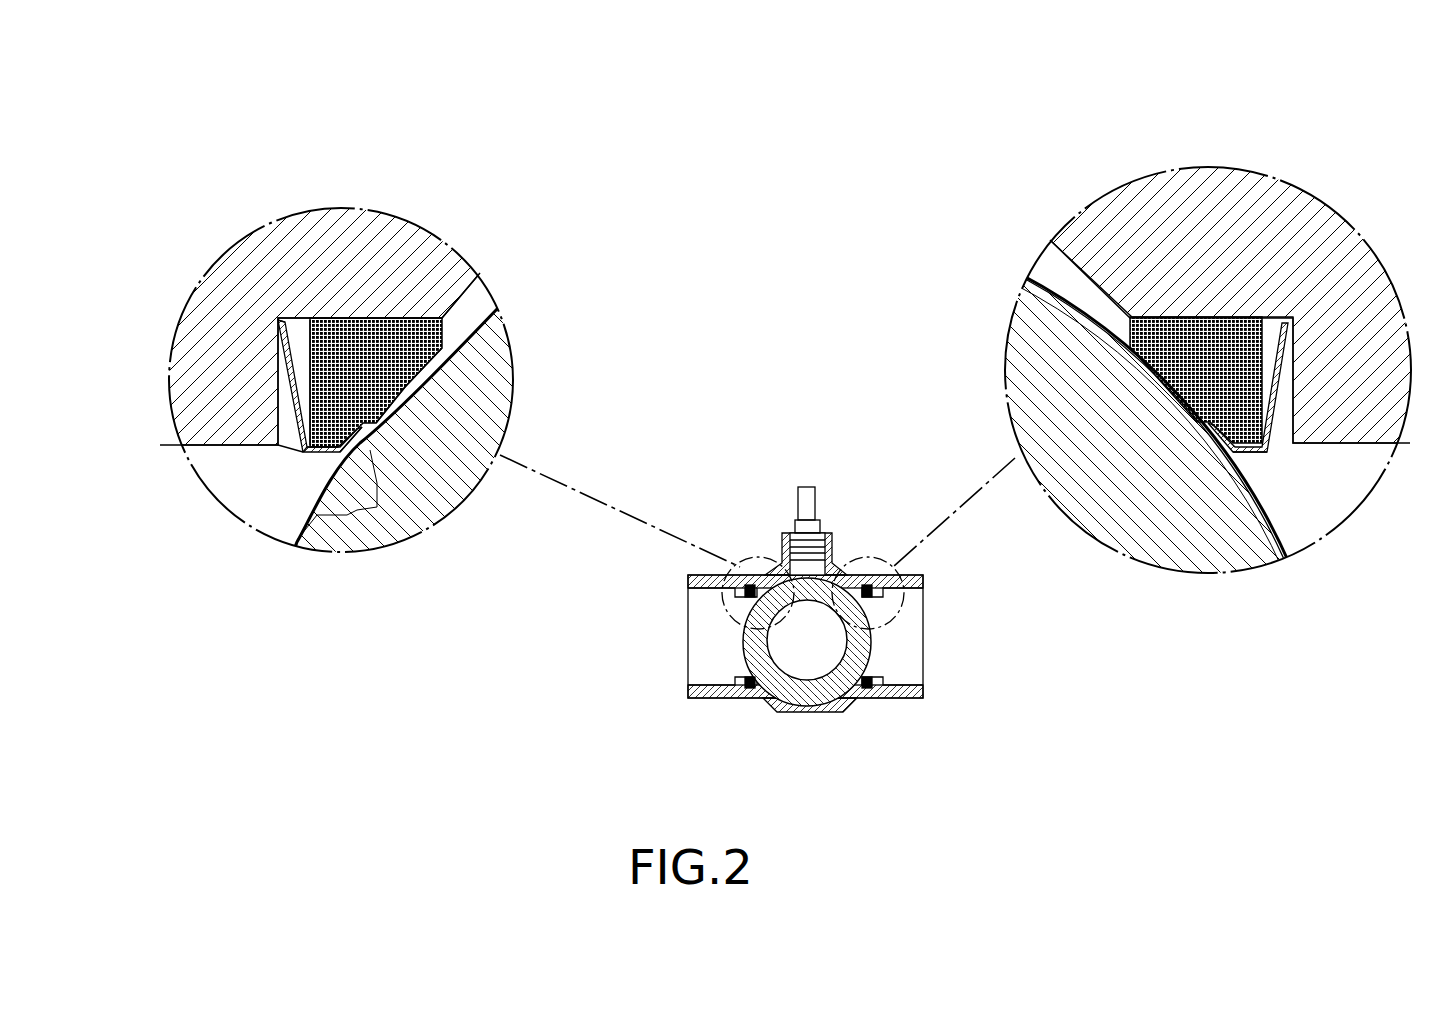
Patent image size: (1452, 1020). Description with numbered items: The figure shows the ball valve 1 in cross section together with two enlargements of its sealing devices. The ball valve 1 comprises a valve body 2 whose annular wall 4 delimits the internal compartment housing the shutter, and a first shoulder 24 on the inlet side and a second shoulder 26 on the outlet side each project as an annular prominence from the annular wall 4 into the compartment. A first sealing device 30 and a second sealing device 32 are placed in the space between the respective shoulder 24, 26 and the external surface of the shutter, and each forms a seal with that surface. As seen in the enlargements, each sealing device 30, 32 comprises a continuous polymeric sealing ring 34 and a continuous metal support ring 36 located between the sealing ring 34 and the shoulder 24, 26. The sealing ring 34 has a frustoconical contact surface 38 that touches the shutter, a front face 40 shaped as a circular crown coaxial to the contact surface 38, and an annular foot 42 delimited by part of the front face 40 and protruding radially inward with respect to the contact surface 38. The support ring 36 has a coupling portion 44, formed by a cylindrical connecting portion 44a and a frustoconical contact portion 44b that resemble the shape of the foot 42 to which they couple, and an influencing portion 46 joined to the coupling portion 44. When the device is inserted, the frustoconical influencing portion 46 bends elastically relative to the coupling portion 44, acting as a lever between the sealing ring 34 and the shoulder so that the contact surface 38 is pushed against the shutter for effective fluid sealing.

The ball valve 1 is at (805, 572).
The valve body 2 is at (873, 703).
The annular wall 4 is at (862, 574).
The first shoulder 24 is at (1337, 397).
The second shoulder 26 is at (235, 393).
The first sealing device 30 is at (1273, 468).
The second sealing device 32 is at (287, 468).
The sealing ring 34 is at (368, 348).
The support ring 36 is at (296, 403).
The contact surface 38 is at (403, 386).
The front face 40 is at (293, 335).
The annular foot 42 is at (329, 424).
The coupling portion 44 is at (317, 515).
The connecting portion 44a is at (306, 457).
The contact portion 44b is at (378, 507).
The influencing portion 46 is at (301, 357).